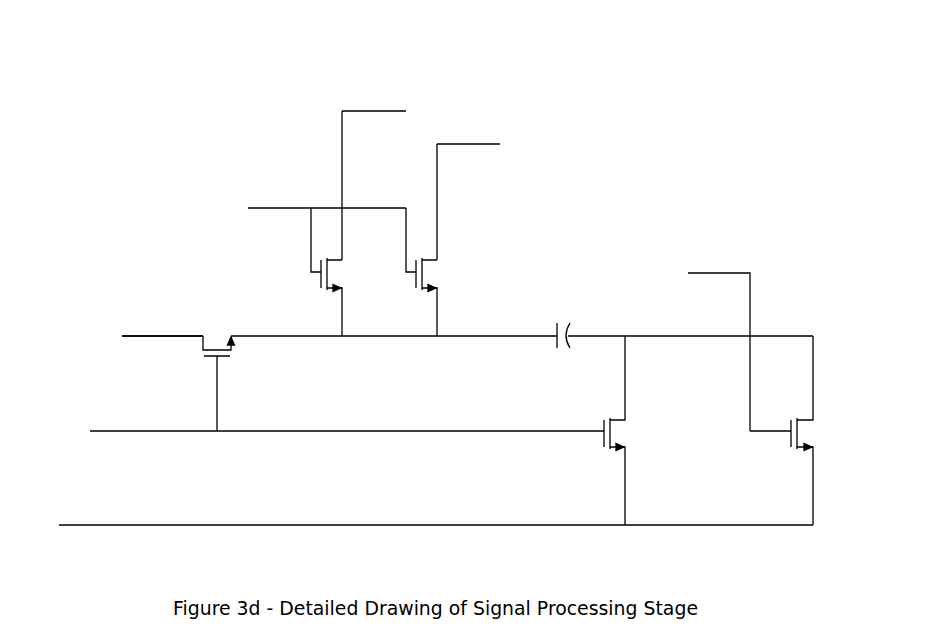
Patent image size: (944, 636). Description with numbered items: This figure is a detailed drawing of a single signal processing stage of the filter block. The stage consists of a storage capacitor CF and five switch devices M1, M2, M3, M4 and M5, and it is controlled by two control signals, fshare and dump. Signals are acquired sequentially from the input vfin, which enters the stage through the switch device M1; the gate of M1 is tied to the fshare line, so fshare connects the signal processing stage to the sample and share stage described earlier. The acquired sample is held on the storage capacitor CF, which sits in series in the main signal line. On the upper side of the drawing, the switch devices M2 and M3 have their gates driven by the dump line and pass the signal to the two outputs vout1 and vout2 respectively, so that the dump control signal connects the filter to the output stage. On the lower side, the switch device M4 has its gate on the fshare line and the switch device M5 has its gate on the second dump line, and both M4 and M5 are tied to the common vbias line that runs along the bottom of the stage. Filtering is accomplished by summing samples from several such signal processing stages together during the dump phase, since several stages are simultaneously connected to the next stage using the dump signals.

The filter input vfin is at (138, 336).
The switch device M1 is at (217, 336).
The fshare control signal fshare is at (107, 431).
The bias voltage line vbias is at (75, 525).
The dump control signal dump is at (264, 208).
The first output vout1 is at (390, 111).
The second output vout2 is at (485, 144).
The switch device M2 is at (327, 293).
The switch device M3 is at (422, 293).
The storage capacitor CF is at (563, 323).
The switch device M4 is at (625, 432).
The switch device M5 is at (813, 432).